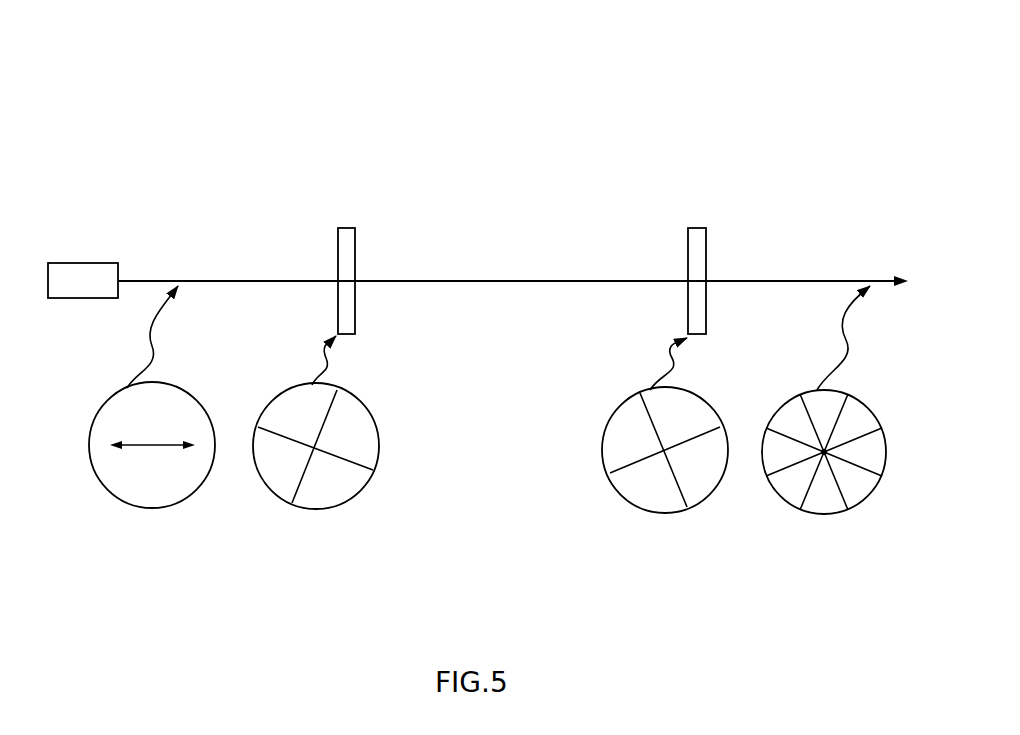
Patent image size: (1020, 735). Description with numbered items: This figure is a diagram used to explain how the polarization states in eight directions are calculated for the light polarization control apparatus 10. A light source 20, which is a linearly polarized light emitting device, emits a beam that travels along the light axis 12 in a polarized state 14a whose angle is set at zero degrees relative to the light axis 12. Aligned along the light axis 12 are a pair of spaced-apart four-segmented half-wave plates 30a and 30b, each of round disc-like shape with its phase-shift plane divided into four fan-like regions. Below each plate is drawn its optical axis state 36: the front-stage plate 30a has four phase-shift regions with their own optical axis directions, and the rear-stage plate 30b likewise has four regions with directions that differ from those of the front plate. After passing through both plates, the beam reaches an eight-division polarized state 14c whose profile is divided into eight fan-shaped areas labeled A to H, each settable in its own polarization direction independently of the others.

The light polarization control apparatus 10 is at (484, 118).
The light axis 12 is at (218, 280).
The light source 20 is at (93, 262).
The front-stage four-segmented half wavelength plate 30a is at (353, 227).
The rear-stage four-segmented half wavelength plate 30b is at (702, 228).
The polarized state 14a is at (148, 507).
The optical axis state 36 is at (325, 508).
The final polarization state 14c is at (833, 513).